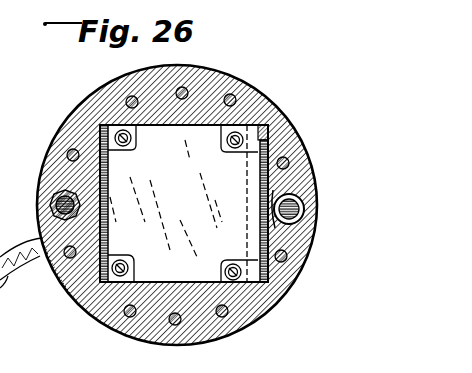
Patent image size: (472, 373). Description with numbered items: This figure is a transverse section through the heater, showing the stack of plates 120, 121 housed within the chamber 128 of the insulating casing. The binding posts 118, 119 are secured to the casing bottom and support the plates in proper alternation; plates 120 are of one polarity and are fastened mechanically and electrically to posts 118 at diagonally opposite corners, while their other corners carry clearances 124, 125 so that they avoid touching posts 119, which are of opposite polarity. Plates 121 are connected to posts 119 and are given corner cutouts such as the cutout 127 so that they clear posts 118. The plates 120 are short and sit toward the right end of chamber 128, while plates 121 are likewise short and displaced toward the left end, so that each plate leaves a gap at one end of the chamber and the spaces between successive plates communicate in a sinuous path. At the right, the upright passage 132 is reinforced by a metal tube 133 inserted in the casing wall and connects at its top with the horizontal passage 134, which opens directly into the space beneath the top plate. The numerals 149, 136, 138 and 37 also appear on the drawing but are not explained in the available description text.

The annular mounting ring 149 is at (197, 70).
The plates 120 is at (184, 203).
The plates 121 is at (101, 127).
The clearance 125 is at (258, 122).
The horizontal passage 134 is at (272, 188).
The chamber 128 is at (214, 127).
The corner cutout 127 is at (133, 143).
The clearance 124 is at (133, 275).
The binding posts 118 is at (126, 147).
The binding posts 119 is at (235, 149).
The ring screw 136 is at (68, 157).
The upright passage 132 is at (306, 208).
The metal tube 133 is at (316, 222).
The hex nut 138 is at (65, 205).
The cable 37 is at (3, 280).